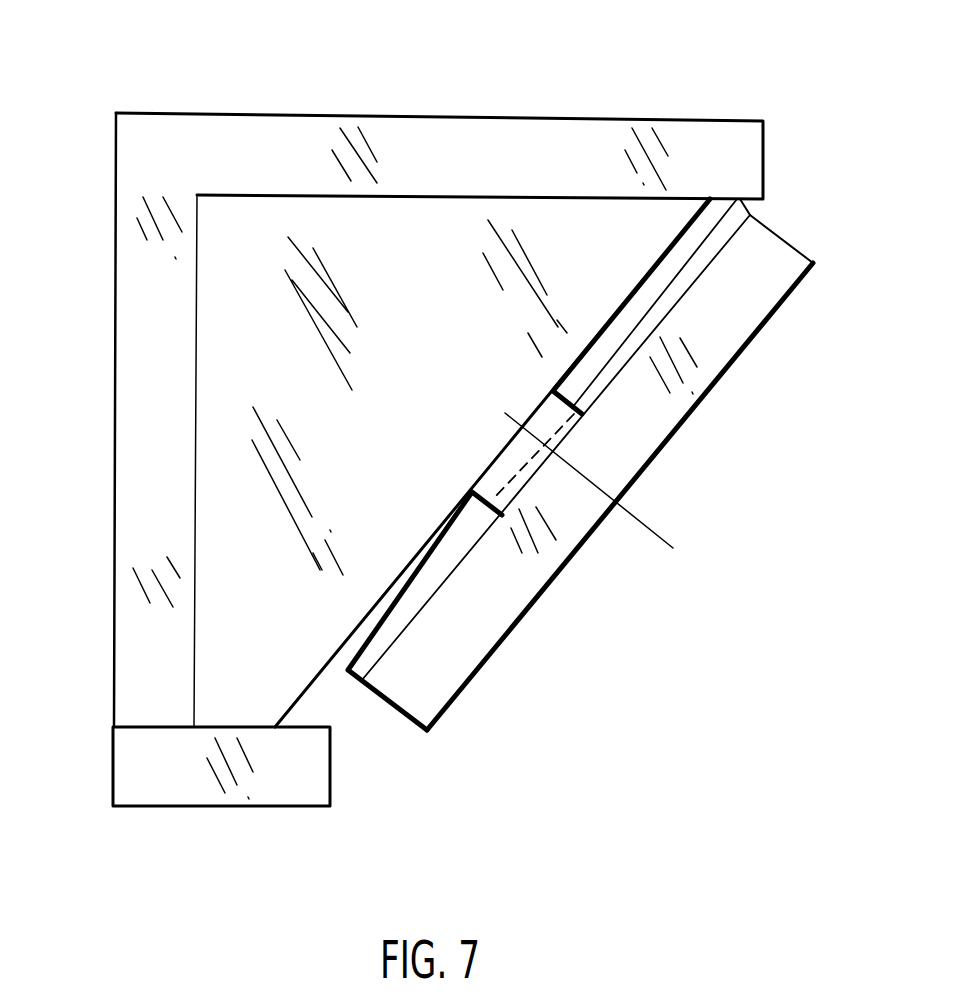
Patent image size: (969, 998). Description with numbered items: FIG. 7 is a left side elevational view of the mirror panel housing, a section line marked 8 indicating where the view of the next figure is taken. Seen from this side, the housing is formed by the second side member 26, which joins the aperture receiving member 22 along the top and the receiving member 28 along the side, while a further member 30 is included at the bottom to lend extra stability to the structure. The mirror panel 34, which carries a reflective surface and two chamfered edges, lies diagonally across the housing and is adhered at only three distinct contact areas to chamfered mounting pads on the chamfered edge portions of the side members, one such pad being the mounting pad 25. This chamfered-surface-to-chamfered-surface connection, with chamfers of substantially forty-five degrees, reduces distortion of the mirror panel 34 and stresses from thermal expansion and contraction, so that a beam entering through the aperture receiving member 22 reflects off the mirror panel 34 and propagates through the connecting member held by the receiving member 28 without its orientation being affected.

The aperture receiving member 22 is at (443, 137).
The second side member 26 is at (243, 377).
The receiving member 28 is at (130, 635).
The member 30 is at (142, 785).
The mirror panel 34 is at (712, 348).
The mounting pad 25 is at (550, 418).
The section line 8- 8 is at (505, 413).